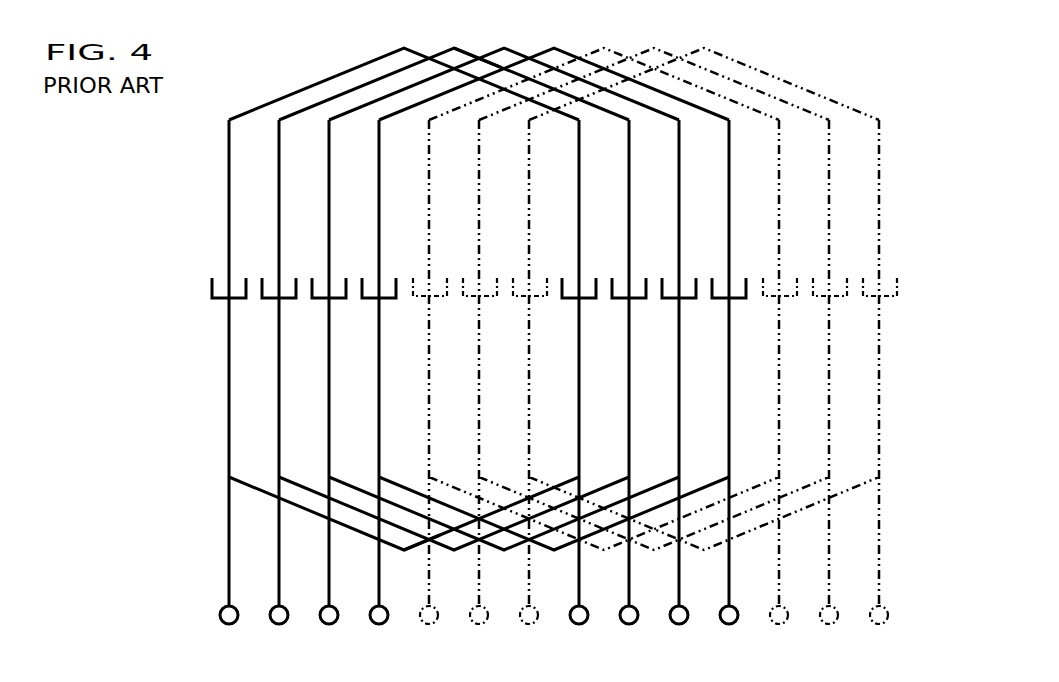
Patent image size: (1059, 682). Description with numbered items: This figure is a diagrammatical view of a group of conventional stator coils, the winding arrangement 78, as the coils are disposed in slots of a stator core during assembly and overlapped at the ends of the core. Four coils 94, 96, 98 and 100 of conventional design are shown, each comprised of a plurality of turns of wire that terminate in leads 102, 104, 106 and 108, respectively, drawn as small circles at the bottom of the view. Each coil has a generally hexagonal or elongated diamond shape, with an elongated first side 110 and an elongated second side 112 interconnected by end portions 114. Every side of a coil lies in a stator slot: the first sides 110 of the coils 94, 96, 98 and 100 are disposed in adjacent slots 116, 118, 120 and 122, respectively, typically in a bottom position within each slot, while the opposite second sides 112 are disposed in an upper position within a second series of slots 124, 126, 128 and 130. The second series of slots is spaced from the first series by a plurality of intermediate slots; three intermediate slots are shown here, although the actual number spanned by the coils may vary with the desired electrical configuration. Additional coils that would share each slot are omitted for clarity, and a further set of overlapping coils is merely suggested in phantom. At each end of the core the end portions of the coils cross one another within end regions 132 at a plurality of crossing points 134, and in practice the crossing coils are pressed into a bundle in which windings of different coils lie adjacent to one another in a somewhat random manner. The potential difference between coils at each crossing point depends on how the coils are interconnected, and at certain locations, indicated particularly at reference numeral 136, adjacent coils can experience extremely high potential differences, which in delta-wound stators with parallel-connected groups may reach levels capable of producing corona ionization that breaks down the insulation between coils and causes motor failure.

The stator winding 78 is at (172, 483).
The coil 94 is at (353, 70).
The coil 96 is at (437, 55).
The coil 98 is at (502, 48).
The coil 100 is at (546, 48).
The lead 102 is at (222, 623).
The lead 104 is at (272, 623).
The lead 106 is at (322, 623).
The lead 108 is at (376, 624).
The first side 110 is at (229, 220).
The second side 112 is at (578, 205).
The end portion 114 is at (286, 96).
The slot 116 is at (213, 298).
The slot 118 is at (266, 298).
The slot 120 is at (316, 298).
The slot 122 is at (366, 298).
The slot 124 is at (566, 298).
The slot 126 is at (616, 298).
The slot 128 is at (666, 298).
The slot 130 is at (716, 298).
The end region 132 is at (596, 41).
The crossing point 134 is at (452, 528).
The high potential difference location 136 is at (479, 75).